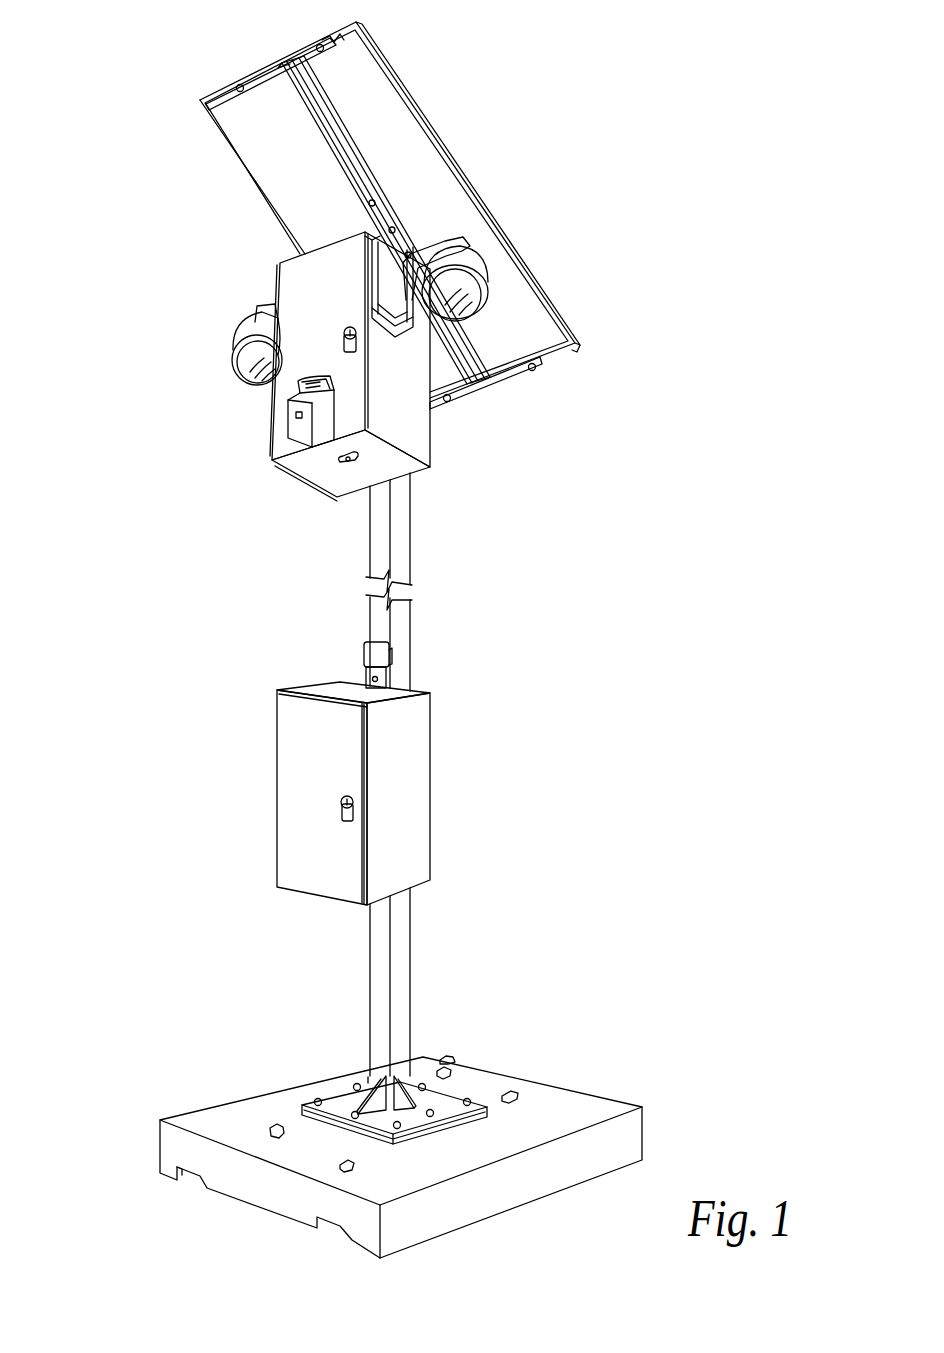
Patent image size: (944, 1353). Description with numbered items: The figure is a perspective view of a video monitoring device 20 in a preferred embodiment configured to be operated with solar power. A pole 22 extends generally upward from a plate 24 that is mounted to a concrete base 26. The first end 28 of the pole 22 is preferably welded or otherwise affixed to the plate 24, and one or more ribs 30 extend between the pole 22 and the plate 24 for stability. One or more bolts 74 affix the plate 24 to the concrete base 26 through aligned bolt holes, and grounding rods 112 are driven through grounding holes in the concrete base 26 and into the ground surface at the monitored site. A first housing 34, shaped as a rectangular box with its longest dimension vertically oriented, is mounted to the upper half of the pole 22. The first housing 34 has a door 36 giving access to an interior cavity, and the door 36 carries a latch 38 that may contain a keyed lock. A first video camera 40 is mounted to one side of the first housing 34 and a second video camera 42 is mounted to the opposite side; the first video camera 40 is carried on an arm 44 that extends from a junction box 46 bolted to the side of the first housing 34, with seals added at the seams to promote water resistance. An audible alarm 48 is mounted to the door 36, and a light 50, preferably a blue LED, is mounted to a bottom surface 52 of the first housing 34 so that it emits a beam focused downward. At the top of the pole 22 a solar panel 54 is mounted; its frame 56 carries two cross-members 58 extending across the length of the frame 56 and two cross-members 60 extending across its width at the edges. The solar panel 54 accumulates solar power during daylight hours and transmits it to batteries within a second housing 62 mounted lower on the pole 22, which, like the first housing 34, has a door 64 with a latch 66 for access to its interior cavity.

The video monitoring device 20 is at (170, 668).
The pole 22 is at (408, 537).
The plate 24 is at (453, 1100).
The concrete base 26 is at (222, 1112).
The first end 28 is at (418, 1066).
The ribs 30 is at (372, 1078).
The first housing 34 is at (266, 253).
The door 36 is at (300, 298).
The latch 38 is at (342, 332).
The first video camera 40 is at (247, 336).
The second video camera 42 is at (472, 266).
The arm 44 is at (452, 240).
The junction box 46 is at (408, 340).
The audible alarm 48 is at (290, 437).
The light 50 is at (336, 464).
The bottom surface 52 is at (351, 465).
The solar panel 54 is at (455, 125).
The frame 56 is at (377, 54).
The cross-members 58 is at (348, 152).
The cross-members 60 is at (246, 80).
The second housing 62 is at (460, 780).
The door 64 is at (290, 764).
The latch 66 is at (338, 808).
The bolts 74 is at (318, 1098).
The grounding rods 112 is at (522, 1100).